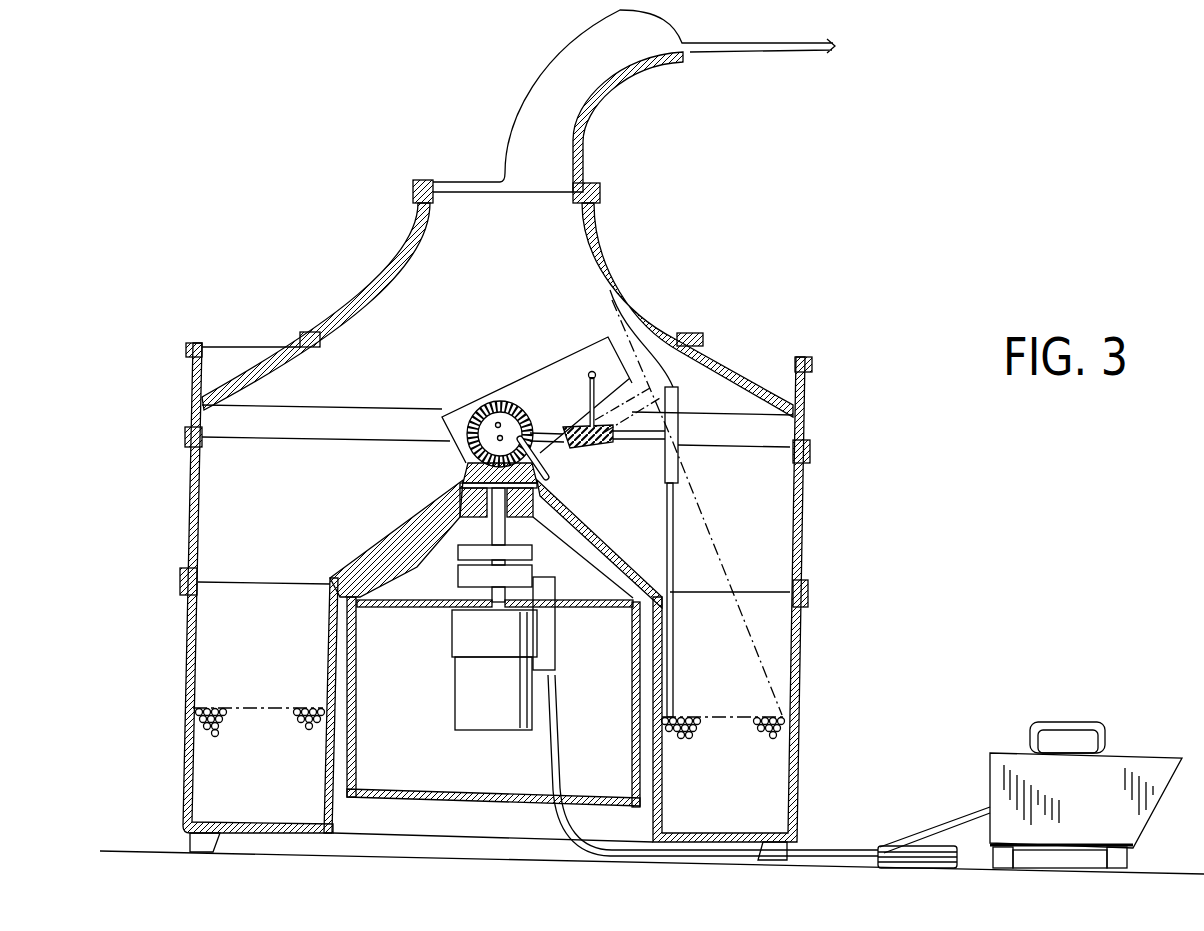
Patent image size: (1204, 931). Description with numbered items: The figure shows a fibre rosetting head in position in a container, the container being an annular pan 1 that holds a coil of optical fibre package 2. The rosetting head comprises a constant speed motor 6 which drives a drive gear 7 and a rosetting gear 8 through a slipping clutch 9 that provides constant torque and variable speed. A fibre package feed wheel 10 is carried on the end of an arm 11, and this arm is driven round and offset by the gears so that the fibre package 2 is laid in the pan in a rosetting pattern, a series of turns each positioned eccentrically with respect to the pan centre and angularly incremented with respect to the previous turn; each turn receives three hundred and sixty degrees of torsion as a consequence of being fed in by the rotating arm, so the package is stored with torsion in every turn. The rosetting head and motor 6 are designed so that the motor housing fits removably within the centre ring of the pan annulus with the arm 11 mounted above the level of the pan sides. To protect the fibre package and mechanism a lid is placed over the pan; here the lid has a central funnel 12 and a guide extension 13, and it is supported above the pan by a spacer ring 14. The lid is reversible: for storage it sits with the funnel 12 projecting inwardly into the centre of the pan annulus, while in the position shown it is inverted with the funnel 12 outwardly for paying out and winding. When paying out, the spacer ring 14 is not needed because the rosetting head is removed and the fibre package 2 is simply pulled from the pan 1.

The annular pan 1 is at (804, 747).
The fibre package 2 is at (738, 572).
The constant speed motor 6 is at (453, 729).
The drive gear 7 is at (463, 472).
The rosetting gear 8 is at (485, 432).
The slipping clutch 9 is at (530, 563).
The fibre package feed wheel 10 is at (677, 437).
The arm 11 is at (556, 453).
The central funnel 12 is at (609, 262).
The guide extension 13 is at (533, 94).
The spacer ring 14 is at (800, 508).